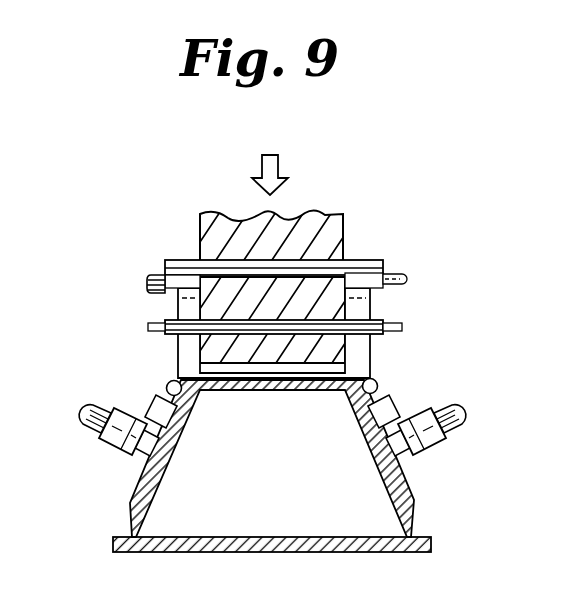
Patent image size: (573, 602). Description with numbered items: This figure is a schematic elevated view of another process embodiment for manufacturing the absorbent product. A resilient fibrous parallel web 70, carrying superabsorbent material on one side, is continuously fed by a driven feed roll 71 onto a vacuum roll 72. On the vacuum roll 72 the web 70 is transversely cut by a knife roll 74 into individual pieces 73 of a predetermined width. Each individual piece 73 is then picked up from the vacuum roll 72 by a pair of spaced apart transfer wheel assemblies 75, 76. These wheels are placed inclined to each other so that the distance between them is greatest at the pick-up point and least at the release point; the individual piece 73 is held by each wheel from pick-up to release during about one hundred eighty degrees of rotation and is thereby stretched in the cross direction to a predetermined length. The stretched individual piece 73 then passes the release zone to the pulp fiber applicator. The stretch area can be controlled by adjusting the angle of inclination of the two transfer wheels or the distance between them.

The resilient fibrous parallel web 70 is at (343, 230).
The driven feed roll 71 is at (382, 257).
The vacuum roll 72 is at (372, 357).
The individual piece 73 is at (275, 390).
The knife roll 74 is at (373, 308).
The transfer wheel assembly 75 is at (106, 481).
The transfer wheel assembly 76 is at (435, 478).